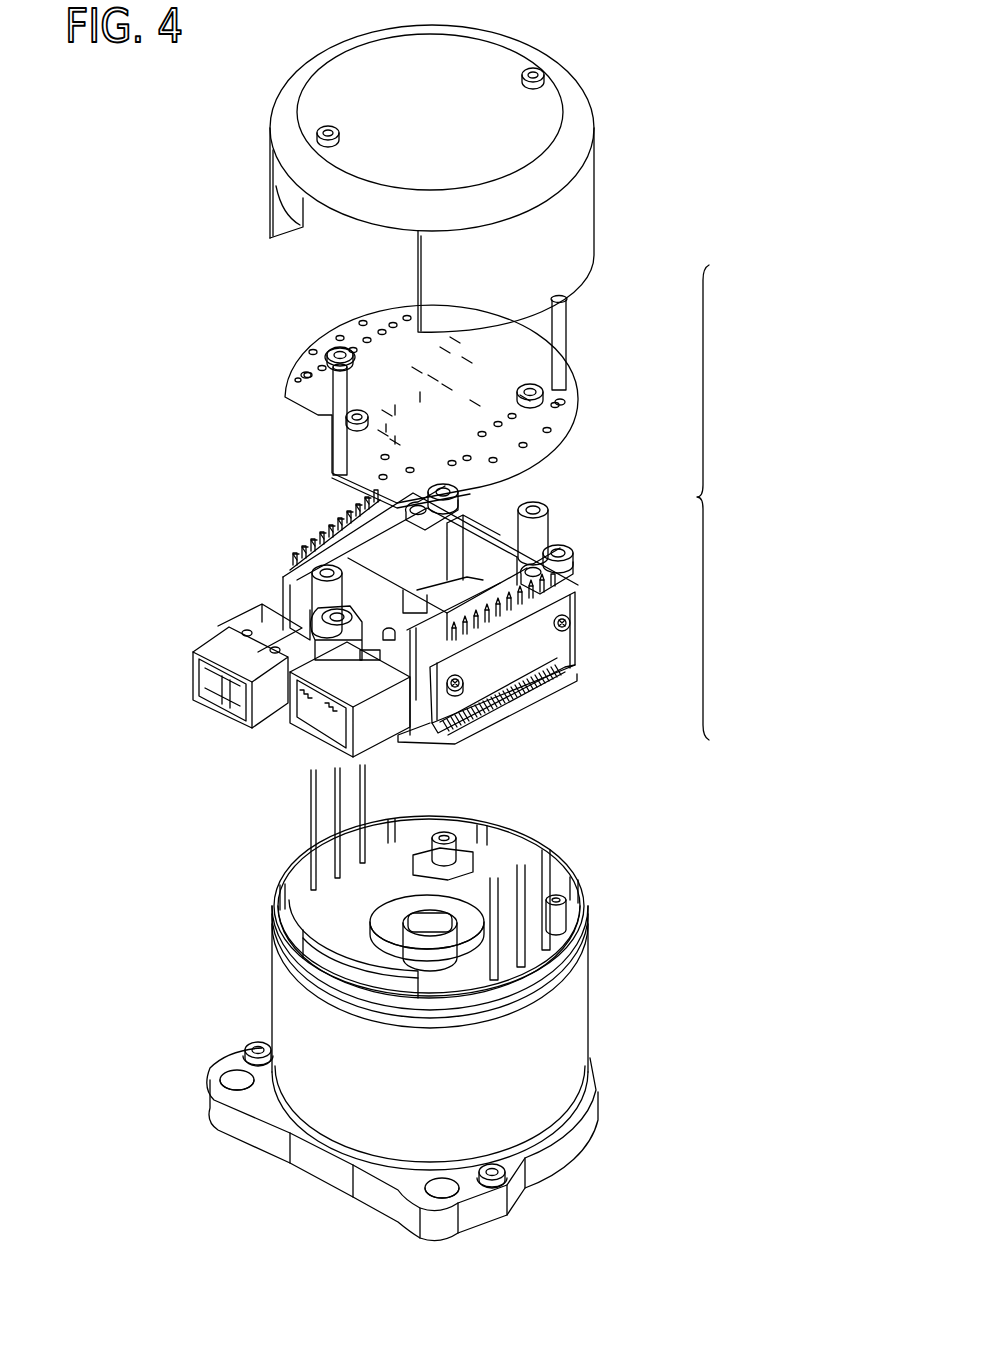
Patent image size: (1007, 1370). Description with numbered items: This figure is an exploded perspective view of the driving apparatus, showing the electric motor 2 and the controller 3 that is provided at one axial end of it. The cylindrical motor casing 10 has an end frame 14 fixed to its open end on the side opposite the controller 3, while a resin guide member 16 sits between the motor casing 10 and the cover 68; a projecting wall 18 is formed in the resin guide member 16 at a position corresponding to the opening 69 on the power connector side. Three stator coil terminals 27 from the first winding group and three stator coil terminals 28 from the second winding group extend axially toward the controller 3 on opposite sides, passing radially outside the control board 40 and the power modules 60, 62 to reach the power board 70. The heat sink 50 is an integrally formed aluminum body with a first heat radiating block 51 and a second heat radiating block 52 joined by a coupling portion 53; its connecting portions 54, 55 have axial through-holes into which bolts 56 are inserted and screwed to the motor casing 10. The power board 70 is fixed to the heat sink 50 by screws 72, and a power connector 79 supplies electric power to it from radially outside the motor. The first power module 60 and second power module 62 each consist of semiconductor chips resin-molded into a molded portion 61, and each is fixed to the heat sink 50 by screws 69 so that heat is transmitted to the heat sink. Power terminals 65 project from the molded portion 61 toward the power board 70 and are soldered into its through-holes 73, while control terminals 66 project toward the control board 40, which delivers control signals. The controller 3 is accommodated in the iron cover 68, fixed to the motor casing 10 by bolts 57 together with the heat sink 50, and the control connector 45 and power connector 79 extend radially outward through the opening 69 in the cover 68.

The electric motor 2 is at (668, 923).
The controller 3 is at (714, 502).
The motor casing 10 is at (590, 1015).
The end frame 14 is at (487, 1212).
The resin guide member 16 is at (520, 834).
The projecting wall 18 is at (318, 955).
The stator coil terminals 27 is at (360, 787).
The stator coil terminals 28 is at (557, 862).
The control board 40 is at (500, 723).
The control connector 45 is at (198, 705).
The heat sink 50 is at (295, 588).
The first heat radiating block 51 is at (350, 560).
The second heat radiating block 52 is at (438, 640).
The coupling portion 53 is at (486, 523).
The connecting portion 54 is at (298, 620).
The connecting portion 55 is at (470, 486).
The bolts 56 is at (329, 443).
The bolts 57 is at (322, 128).
The first power module 60 is at (305, 598).
The molded portion 61 is at (532, 655).
The second power module 62 is at (568, 640).
The power terminals 65 is at (310, 556).
The control terminals 66 is at (538, 697).
The cover 68 is at (596, 192).
The opening 69 is at (268, 212).
The power board 70 is at (323, 335).
The screws 72 is at (345, 412).
The through-holes 73 is at (304, 372).
The power connector 79 is at (303, 735).